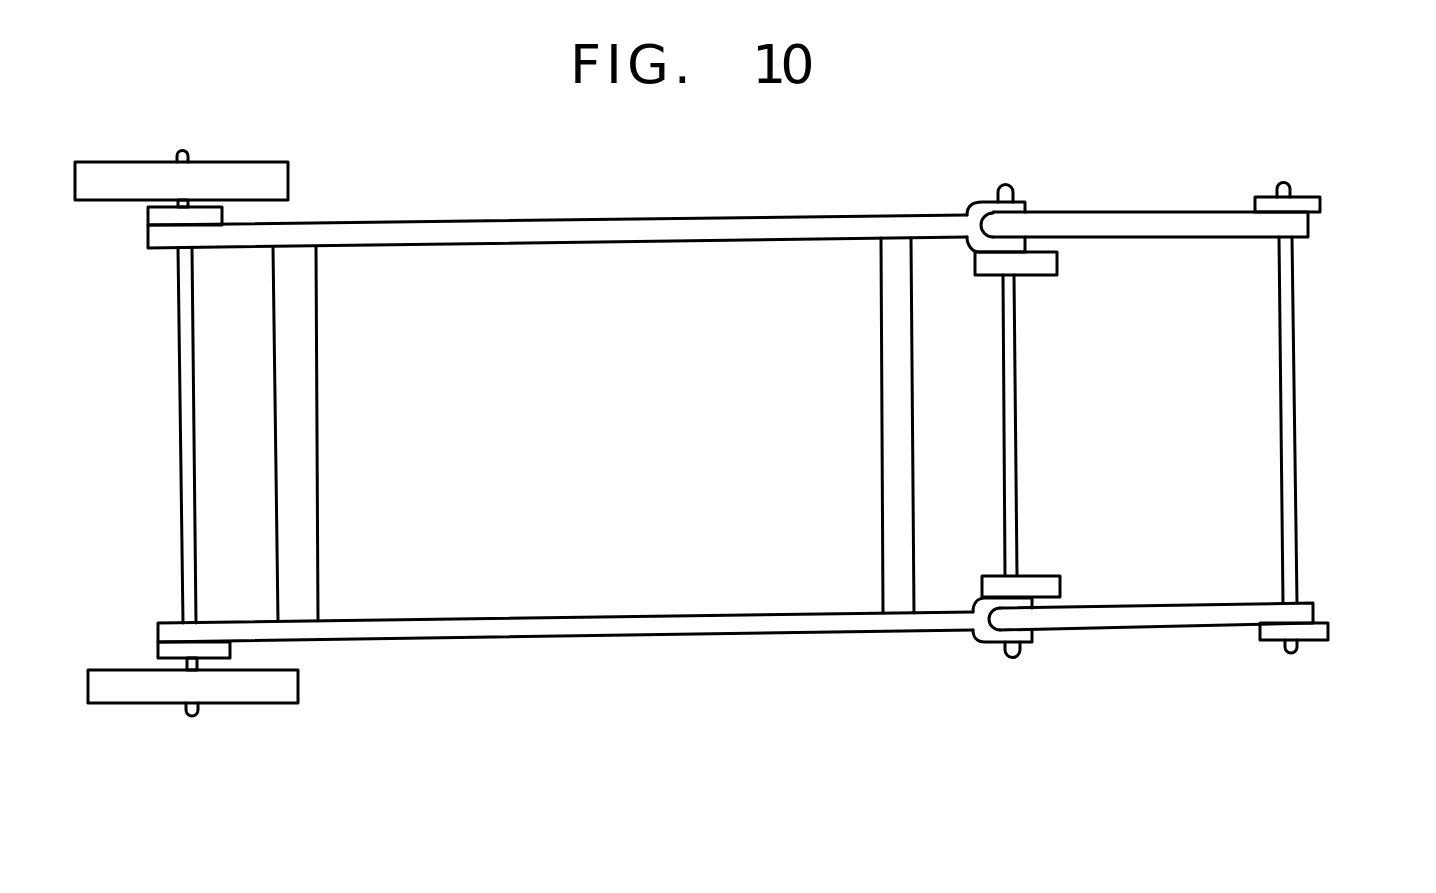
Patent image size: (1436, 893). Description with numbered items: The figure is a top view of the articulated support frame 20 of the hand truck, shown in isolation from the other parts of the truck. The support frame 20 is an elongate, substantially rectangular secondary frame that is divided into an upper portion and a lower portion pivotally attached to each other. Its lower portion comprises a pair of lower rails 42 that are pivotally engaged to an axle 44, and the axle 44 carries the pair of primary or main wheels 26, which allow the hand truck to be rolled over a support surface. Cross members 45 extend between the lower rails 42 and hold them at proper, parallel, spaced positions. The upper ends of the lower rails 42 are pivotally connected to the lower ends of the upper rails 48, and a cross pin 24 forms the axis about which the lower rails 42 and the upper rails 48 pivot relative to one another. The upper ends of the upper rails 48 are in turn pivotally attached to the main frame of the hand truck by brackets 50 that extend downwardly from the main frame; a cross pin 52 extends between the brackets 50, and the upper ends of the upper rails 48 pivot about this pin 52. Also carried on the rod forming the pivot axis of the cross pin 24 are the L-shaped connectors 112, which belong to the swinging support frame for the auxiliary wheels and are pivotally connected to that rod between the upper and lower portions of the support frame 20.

The support frame 20 is at (862, 201).
The cross pin 24 is at (1007, 415).
The main wheels 26 is at (222, 175).
The lower rails 42 is at (590, 232).
The axle 44 is at (187, 440).
The cross members 45 is at (300, 450).
The upper rails 48 is at (1165, 225).
The brackets 50 is at (1305, 203).
The cross pin 52 is at (1290, 410).
The L-shaped connector 112 is at (1037, 267).